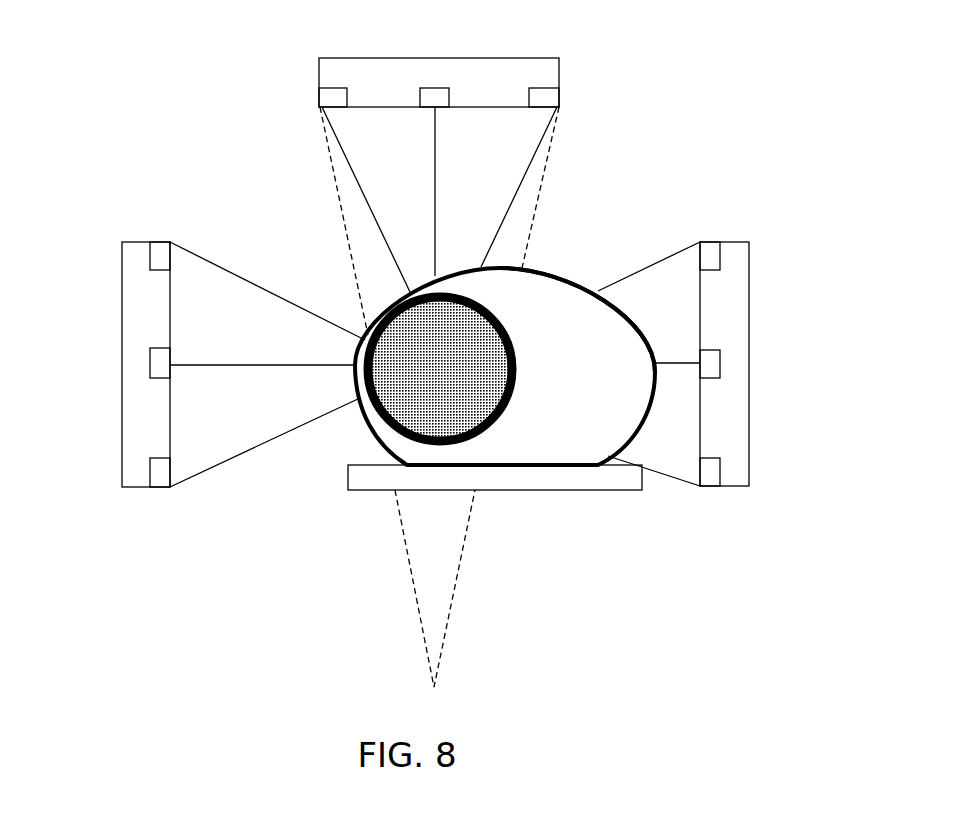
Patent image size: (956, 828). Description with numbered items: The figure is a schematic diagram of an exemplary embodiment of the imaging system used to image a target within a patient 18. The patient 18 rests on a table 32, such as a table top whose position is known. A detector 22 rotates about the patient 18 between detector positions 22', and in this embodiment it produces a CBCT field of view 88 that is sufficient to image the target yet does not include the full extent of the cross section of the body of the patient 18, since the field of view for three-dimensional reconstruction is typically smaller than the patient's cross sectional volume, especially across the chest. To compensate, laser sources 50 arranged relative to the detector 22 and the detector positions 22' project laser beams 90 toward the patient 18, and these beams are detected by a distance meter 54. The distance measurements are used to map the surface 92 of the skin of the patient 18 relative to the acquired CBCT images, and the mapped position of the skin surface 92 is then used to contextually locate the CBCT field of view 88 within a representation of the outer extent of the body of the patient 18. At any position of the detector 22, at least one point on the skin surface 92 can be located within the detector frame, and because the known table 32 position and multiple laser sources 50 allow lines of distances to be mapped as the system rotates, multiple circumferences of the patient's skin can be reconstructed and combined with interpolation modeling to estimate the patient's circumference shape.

The patient 18 is at (578, 276).
The detector 22 is at (475, 81).
The detector positions 22' is at (437, 364).
The table 32 is at (356, 491).
The laser sources 50 is at (333, 90).
The distance meter 54 is at (434, 90).
The CBCT field of view 88 is at (512, 364).
The laser beams 90 is at (358, 180).
The surface 92 is at (500, 266).